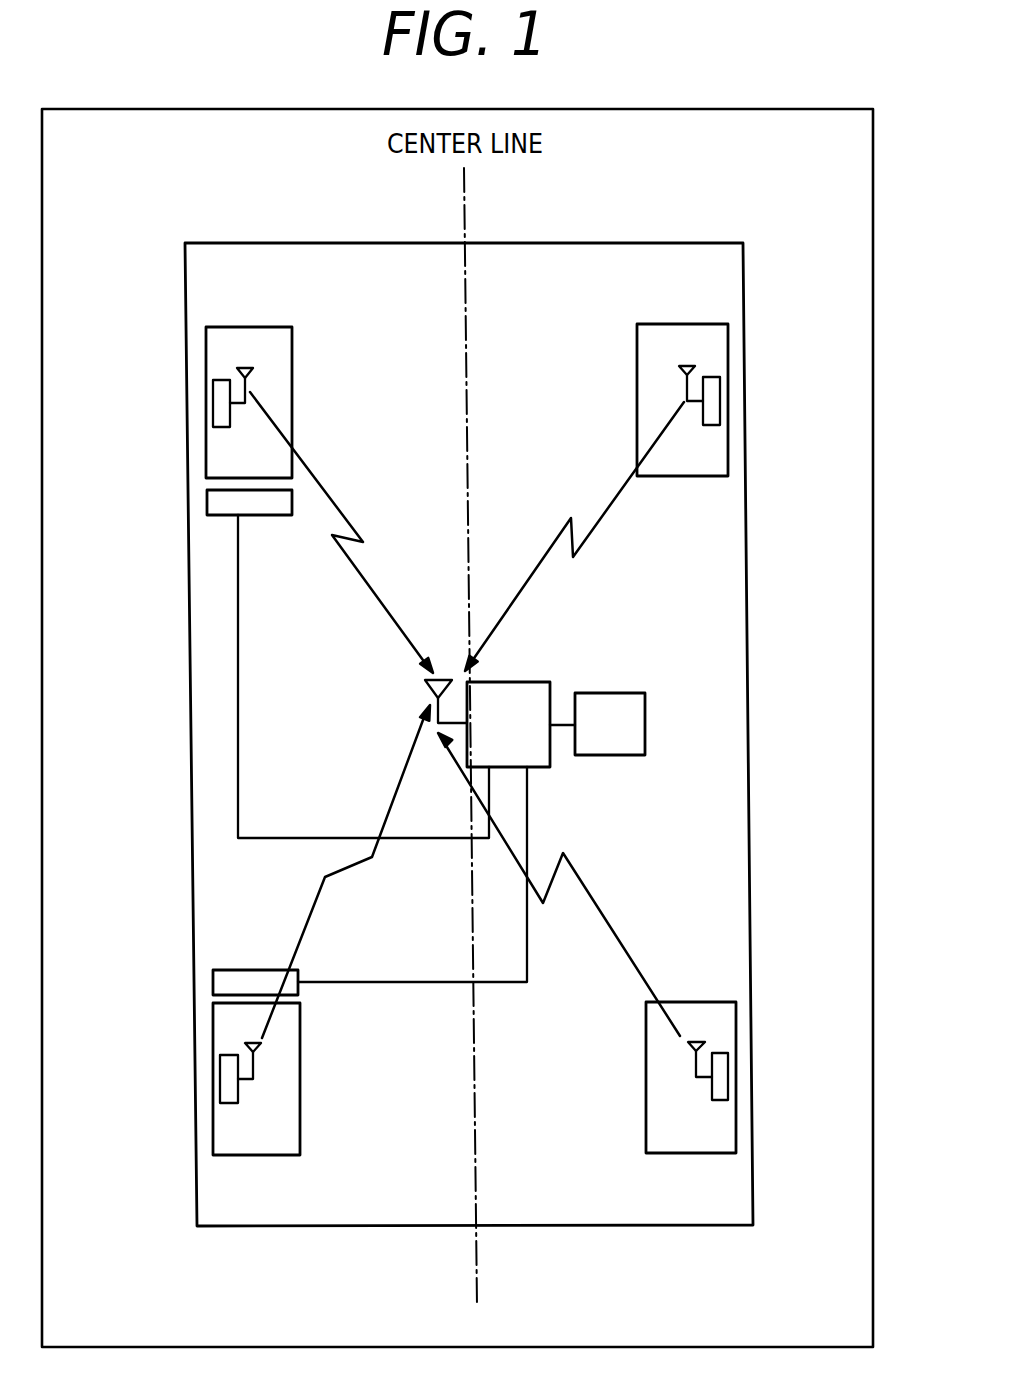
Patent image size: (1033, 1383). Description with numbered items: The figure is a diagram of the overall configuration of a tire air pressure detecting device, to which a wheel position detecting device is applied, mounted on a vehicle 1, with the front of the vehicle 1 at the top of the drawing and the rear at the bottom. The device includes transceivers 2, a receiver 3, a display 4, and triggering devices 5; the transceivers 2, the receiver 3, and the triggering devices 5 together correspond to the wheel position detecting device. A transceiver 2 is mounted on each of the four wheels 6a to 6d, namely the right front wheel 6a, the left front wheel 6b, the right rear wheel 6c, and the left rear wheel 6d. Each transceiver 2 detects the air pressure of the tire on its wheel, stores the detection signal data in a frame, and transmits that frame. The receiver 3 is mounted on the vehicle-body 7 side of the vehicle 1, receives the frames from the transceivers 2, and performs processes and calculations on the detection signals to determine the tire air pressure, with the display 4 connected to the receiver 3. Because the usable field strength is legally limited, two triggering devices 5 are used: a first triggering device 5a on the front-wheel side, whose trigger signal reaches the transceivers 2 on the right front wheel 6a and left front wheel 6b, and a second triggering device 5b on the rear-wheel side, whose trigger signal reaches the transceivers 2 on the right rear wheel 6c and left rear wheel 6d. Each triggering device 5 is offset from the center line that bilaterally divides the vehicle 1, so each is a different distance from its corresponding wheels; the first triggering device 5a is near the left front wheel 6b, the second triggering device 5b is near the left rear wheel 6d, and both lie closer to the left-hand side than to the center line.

The vehicle 1 is at (639, 235).
The transceiver 2 is at (213, 380).
The receiver 3 is at (515, 682).
The display 4 is at (608, 755).
The triggering device 5 is at (306, 742).
The first triggering device 5a is at (207, 503).
The second triggering device 5b is at (213, 980).
The right front wheel 6a is at (682, 324).
The left front wheel 6b is at (250, 327).
The right rear wheel 6c is at (693, 1153).
The left rear wheel 6d is at (250, 1155).
The vehicle-body 7 is at (748, 660).